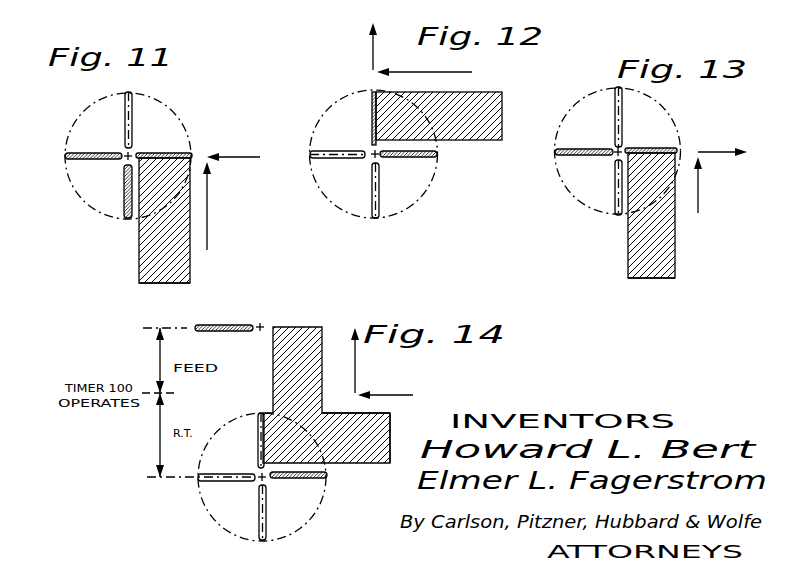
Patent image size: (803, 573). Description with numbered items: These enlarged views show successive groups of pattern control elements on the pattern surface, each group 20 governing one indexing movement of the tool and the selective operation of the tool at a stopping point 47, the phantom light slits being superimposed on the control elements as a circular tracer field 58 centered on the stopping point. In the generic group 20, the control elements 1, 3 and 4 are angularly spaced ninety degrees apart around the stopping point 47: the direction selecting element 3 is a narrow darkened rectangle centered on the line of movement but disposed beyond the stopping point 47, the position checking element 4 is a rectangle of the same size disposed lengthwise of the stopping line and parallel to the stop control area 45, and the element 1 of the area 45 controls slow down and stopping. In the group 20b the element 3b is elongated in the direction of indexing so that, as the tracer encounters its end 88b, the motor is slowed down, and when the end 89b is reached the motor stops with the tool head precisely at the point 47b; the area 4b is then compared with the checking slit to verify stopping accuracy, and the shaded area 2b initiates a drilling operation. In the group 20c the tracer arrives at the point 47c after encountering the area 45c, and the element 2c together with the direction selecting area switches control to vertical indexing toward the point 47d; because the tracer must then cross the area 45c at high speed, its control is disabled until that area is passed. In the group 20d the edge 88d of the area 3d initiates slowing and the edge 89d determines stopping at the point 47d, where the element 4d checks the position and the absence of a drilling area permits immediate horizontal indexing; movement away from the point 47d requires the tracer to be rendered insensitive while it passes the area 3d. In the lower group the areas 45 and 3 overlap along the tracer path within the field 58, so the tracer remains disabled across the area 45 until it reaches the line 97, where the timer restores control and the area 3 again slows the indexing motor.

In FIG. 12, the slow-down and stopping control element 1 is at (372, 105).
In FIG. 11, the shaded drilling control area 2b is at (124, 195).
In FIG. 12, the control element 2c is at (437, 155).
In FIG. 14, the direction selecting element 3 is at (310, 372).
In FIG. 11, the elongated direction selecting area 3b is at (140, 257).
In FIG. 13, the direction selecting area 3d is at (675, 233).
In FIG. 14, the position checking element 4 is at (227, 331).
In FIG. 11, the position checking area 4b is at (70, 151).
In FIG. 13, the position checking element 4d is at (563, 157).
In FIG. 14, the group of control elements 20 is at (306, 314).
In FIG. 11, the set of control elements 20b is at (67, 200).
In FIG. 12, the control group 20c is at (444, 186).
In FIG. 13, the pattern group 20d is at (586, 226).
In FIG. 14, the stop control area 45 is at (377, 433).
In FIG. 12, the stop control area 45c is at (474, 98).
In FIG. 14, the stopping point 47 is at (261, 325).
In FIG. 11, the stopping point 47b is at (129, 153).
In FIG. 12, the stopping point 47c is at (373, 157).
In FIG. 13, the stopping point 47d is at (621, 150).
In FIG. 11, the circular tool path 58 is at (177, 110).
In FIG. 12, the circular tool path 58 is at (403, 213).
In FIG. 13, the circular tool path 58 is at (665, 108).
In FIG. 14, the circular tool path 58 is at (303, 522).
In FIG. 11, the end of area 3b 88b is at (185, 283).
In FIG. 13, the edge of area 3d 88d is at (672, 278).
In FIG. 11, the end of area 3b 89b is at (187, 152).
In FIG. 13, the edge of area 3d 89d is at (663, 148).
In FIG. 14, the line 97 is at (177, 393).